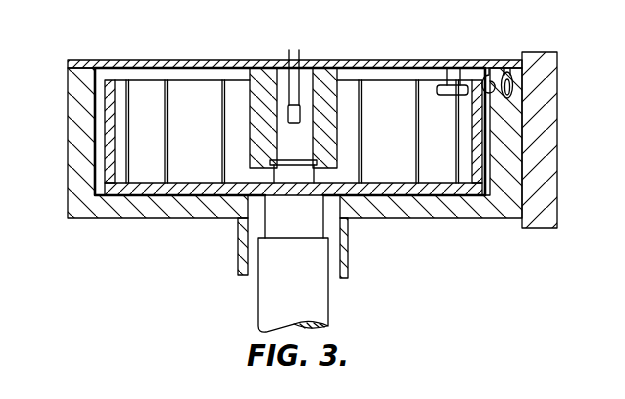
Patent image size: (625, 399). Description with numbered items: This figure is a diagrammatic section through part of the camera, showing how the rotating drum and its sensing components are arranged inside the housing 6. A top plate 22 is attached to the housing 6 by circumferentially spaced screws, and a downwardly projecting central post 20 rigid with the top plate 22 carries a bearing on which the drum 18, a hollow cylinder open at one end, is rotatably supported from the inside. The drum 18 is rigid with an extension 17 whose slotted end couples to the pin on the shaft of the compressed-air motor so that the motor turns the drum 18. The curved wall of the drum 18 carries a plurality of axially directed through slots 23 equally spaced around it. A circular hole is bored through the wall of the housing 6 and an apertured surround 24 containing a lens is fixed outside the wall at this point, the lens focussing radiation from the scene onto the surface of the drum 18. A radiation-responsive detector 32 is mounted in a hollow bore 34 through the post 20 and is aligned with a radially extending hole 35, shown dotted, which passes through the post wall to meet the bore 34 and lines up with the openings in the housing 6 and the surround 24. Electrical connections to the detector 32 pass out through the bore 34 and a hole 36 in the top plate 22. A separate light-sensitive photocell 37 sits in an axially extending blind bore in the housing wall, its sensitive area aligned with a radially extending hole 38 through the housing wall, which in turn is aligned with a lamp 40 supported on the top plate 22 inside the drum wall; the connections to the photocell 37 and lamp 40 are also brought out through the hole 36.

The housing 6 is at (67, 127).
The extension 17 is at (317, 228).
The drum 18 is at (107, 82).
The central post 20 is at (323, 105).
The top plate 22 is at (174, 60).
The through slots 23 is at (128, 112).
The apertured surround 24 is at (545, 158).
The radiation-responsive detector 32 is at (288, 115).
The hollow bore 34 is at (307, 80).
The radially extending hole 35 is at (332, 115).
The hole 36 is at (285, 58).
The photocell 37 is at (513, 88).
The radially extending hole 38 is at (490, 80).
The lamp 40 is at (450, 84).